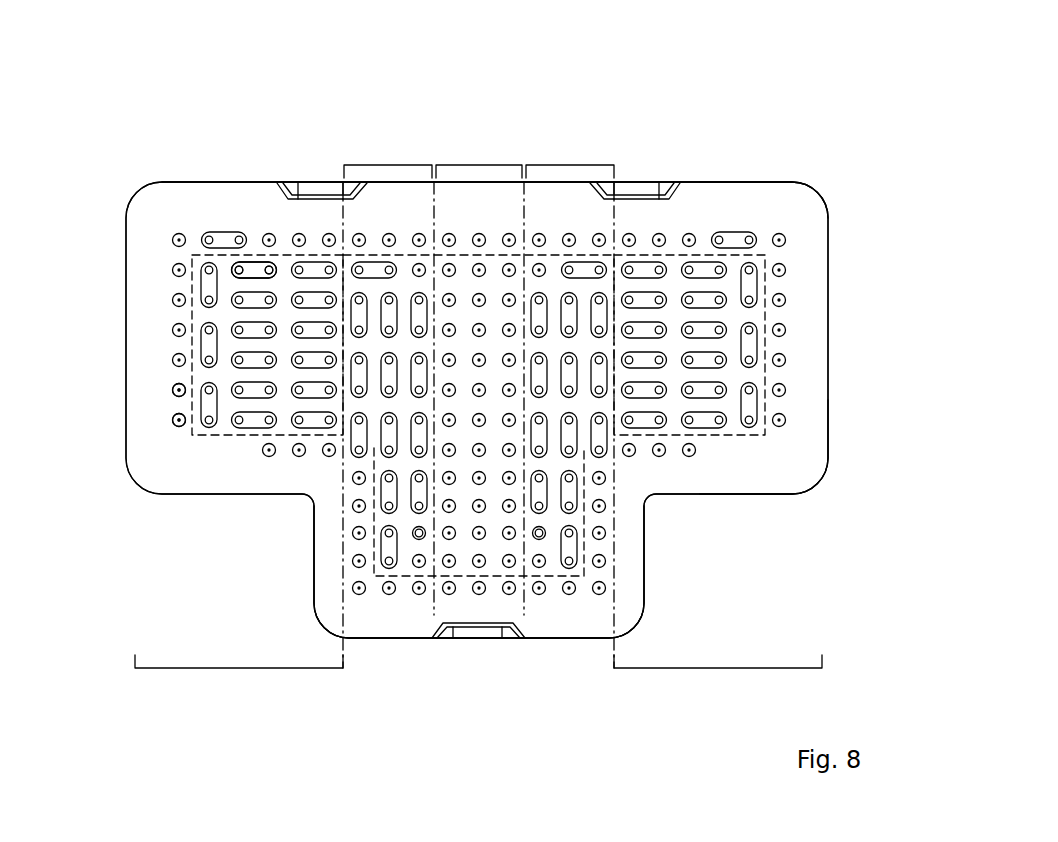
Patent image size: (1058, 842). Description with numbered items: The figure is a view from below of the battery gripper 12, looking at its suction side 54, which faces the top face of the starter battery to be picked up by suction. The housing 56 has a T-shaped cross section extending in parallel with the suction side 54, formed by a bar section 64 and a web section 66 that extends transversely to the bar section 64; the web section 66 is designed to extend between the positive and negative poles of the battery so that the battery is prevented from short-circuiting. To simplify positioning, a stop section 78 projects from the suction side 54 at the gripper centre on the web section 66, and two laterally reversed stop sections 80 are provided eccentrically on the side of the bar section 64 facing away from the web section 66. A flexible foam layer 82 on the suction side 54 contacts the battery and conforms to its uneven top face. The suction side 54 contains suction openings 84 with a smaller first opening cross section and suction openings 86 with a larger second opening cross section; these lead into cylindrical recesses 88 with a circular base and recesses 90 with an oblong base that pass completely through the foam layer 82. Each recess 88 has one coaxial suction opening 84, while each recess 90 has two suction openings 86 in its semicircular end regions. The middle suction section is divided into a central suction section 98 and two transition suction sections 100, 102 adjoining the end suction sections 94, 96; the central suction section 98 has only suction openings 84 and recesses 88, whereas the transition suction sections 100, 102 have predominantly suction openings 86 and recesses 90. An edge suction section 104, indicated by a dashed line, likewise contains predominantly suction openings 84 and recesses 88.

The battery gripper 12 is at (776, 43).
The suction side 54 is at (818, 262).
The housing 56 is at (805, 472).
The bar section 64 is at (718, 200).
The web section 66 is at (634, 580).
The stop section 78 is at (487, 634).
The stop sections 80 is at (317, 192).
The foam layer 82 is at (778, 200).
The suction openings having a first opening cross section 84 is at (176, 402).
The suction openings having a second opening cross section 86 is at (237, 268).
The recesses having a circular base 88 is at (175, 392).
The recesses having an oblong base 90 is at (248, 268).
The end suction section 94 is at (239, 483).
The end suction section 96 is at (718, 483).
The central suction section 98 is at (478, 372).
The transition suction section 100 is at (387, 399).
The transition suction section 102 is at (570, 399).
The edge suction section 104 is at (785, 393).